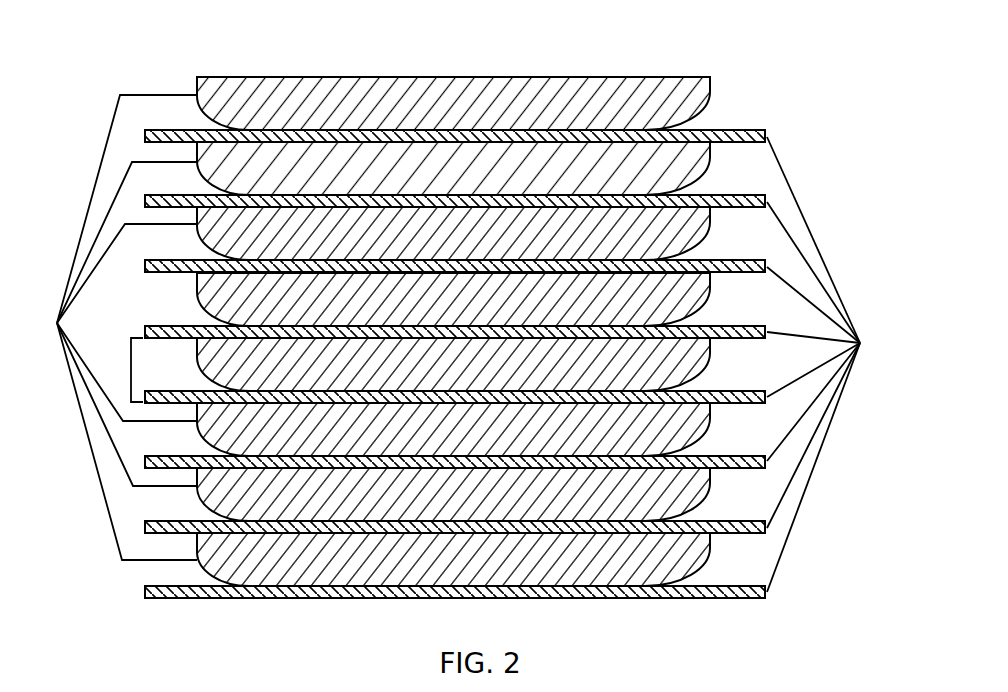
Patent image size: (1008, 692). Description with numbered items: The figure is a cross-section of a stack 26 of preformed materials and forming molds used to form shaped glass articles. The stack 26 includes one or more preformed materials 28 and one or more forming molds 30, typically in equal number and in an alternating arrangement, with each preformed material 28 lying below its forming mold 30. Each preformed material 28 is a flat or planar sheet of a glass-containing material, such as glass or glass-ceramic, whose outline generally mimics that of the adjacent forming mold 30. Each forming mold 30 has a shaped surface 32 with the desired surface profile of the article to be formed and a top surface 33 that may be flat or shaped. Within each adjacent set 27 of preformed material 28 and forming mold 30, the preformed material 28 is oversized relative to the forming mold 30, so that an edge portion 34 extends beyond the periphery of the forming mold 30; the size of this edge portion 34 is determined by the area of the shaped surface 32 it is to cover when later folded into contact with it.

The stack 26 is at (491, 70).
The adjacent set 27 is at (422, 357).
The preformed material 28 is at (832, 364).
The forming mold 30 is at (111, 327).
The shaped surface 32 is at (476, 83).
The top surface 33 is at (585, 78).
The edge portion 34 is at (745, 130).